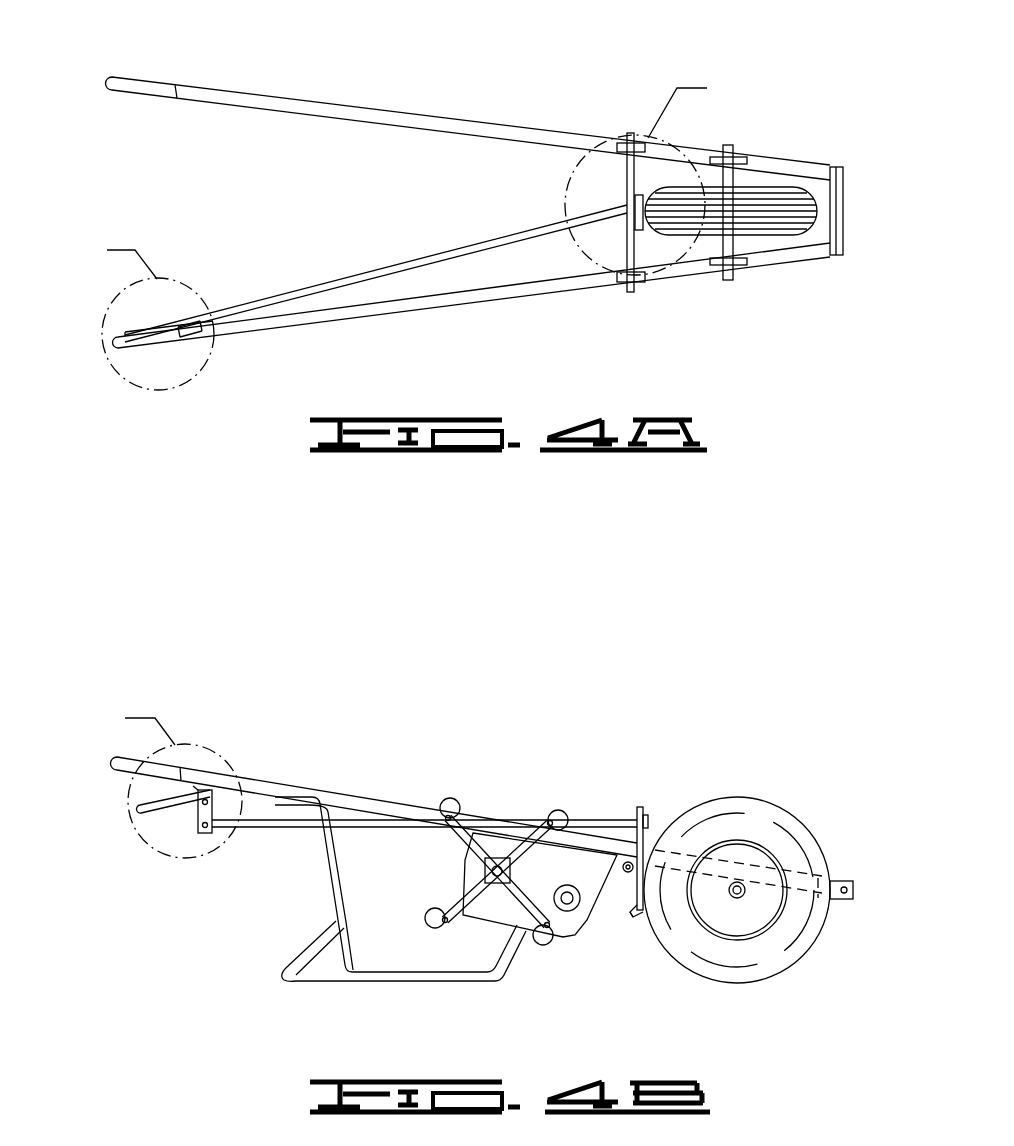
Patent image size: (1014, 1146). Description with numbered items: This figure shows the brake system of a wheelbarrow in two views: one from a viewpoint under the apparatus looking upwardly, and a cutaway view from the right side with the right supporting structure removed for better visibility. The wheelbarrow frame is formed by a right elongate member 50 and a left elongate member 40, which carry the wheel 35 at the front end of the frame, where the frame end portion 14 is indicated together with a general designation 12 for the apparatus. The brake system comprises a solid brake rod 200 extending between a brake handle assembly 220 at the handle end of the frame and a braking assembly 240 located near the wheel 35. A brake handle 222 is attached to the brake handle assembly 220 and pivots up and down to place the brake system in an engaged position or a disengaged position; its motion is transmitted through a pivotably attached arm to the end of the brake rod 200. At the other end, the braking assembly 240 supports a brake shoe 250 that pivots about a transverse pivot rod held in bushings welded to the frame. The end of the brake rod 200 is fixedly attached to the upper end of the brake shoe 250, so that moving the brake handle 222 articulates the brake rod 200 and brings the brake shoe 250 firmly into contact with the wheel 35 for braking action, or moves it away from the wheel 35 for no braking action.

In FIG. 4A, the wheelbarrow / cart assembly 12 is at (128, 178).
In FIG. 4A, the frame end / front frame portion 14 is at (822, 138).
In FIG. 4A, the wheel 35 is at (817, 207).
In FIG. 4A, the left elongate member 40 is at (328, 337).
In FIG. 4A, the right elongate member 50 is at (295, 78).
In FIG. 4A, the brake rod 200 is at (373, 278).
In FIG. 4B, the brake rod 200 is at (288, 827).
In FIG. 4A, the brake handle assembly 220 is at (192, 282).
In FIG. 4B, the brake handle assembly 220 is at (222, 743).
In FIG. 4A, the brake handle 222 is at (137, 343).
In FIG. 4B, the brake handle 222 is at (150, 837).
In FIG. 4A, the braking assembly 240 is at (563, 188).
In FIG. 4B, the braking assembly 240 is at (648, 790).
In FIG. 4B, the brake shoe 250 is at (633, 913).